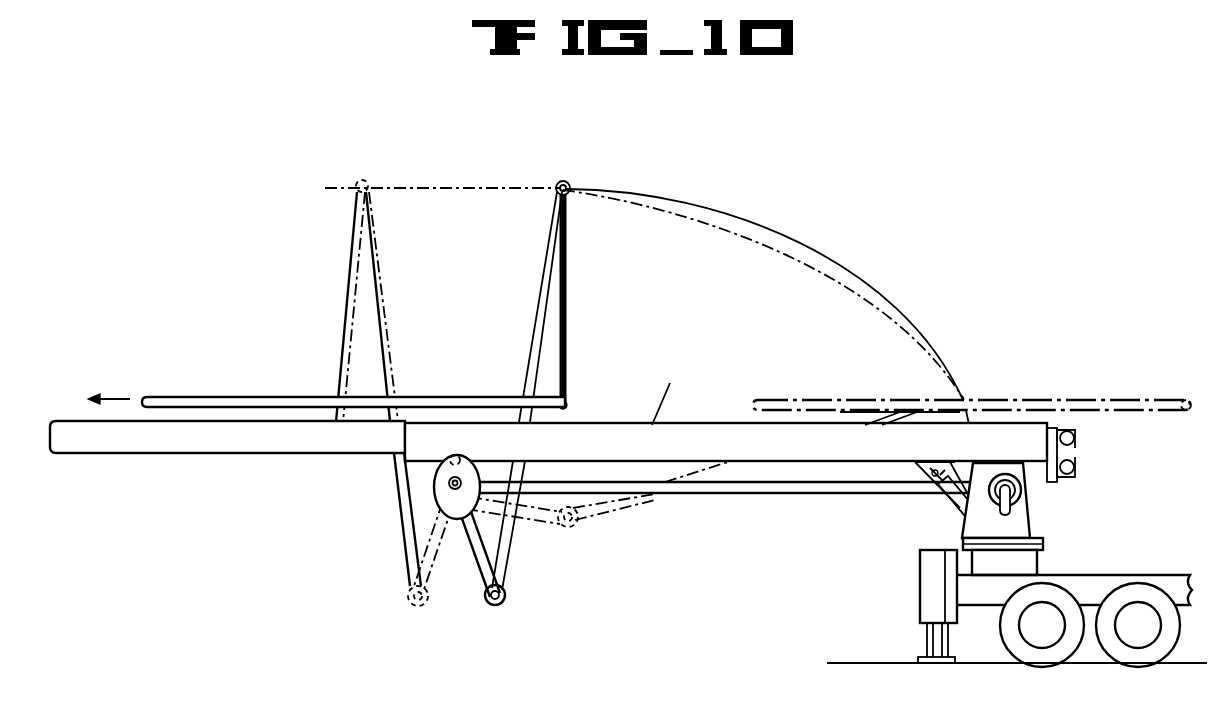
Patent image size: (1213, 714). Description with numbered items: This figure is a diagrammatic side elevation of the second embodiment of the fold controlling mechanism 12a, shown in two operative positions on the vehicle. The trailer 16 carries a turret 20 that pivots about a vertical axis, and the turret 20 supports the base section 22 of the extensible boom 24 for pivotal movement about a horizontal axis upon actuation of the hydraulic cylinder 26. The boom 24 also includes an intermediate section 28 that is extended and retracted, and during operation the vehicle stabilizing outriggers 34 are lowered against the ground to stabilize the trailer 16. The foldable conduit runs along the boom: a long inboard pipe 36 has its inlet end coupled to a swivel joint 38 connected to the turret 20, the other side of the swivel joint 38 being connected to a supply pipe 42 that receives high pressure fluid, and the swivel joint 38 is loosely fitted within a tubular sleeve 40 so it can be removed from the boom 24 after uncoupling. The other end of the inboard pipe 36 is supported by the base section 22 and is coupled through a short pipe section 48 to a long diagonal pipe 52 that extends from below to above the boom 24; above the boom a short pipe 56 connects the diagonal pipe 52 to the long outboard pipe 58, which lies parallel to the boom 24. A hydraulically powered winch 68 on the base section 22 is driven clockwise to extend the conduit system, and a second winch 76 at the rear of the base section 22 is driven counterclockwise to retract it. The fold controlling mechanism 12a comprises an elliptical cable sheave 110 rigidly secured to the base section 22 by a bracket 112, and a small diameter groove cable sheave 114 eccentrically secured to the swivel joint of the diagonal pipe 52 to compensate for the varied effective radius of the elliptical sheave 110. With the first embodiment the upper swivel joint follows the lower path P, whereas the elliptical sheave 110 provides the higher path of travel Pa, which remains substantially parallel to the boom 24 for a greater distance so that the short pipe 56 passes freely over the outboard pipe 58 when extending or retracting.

The fold controlling mechanism 12a is at (512, 599).
The trailer 16 is at (1128, 578).
The turret 20 is at (1026, 526).
The base section 22 is at (586, 426).
The extensible boom 24 is at (651, 427).
The hydraulic cylinder 26 is at (945, 499).
The intermediate section 28 is at (102, 454).
The vehicle stabilizing outriggers 34 is at (928, 637).
The inboard pipe 36 is at (740, 494).
The swivel joint 38 is at (1021, 491).
The tubular sleeve 40 is at (1007, 478).
The supply pipe 42 is at (978, 524).
The short pipe section 48 is at (418, 563).
The long diagonal pipe 52 is at (537, 306).
The short pipe 56 is at (343, 306).
The long outboard pipe 58 is at (196, 383).
The hydraulically powered winch 68 is at (1080, 467).
The second winch 76 is at (1080, 437).
The elliptical cable sheave 110 is at (440, 487).
The bracket 112 is at (462, 459).
The small diameter groove cable sheave 114 is at (414, 610).
The path P is at (878, 281).
The higher path of travel Pa is at (787, 226).